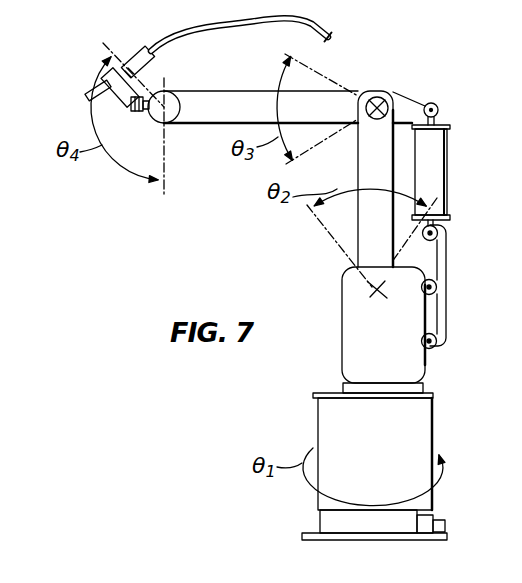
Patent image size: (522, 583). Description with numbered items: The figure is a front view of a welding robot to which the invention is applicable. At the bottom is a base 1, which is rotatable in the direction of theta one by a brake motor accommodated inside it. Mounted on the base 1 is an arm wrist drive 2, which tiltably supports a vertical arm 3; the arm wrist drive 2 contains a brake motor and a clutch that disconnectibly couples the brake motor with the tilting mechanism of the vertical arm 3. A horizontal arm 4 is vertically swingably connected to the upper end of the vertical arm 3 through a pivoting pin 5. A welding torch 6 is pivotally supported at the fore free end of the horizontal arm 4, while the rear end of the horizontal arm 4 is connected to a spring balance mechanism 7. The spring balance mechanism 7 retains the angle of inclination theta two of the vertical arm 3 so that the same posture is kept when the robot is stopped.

The base 1 is at (381, 449).
The arm wrist drive 2 is at (390, 360).
The vertical arm 3 is at (367, 240).
The horizontal arm 4 is at (330, 100).
The pivoting pin 5 is at (379, 103).
The welding torch 6 is at (84, 99).
The spring balance mechanism 7 is at (446, 158).